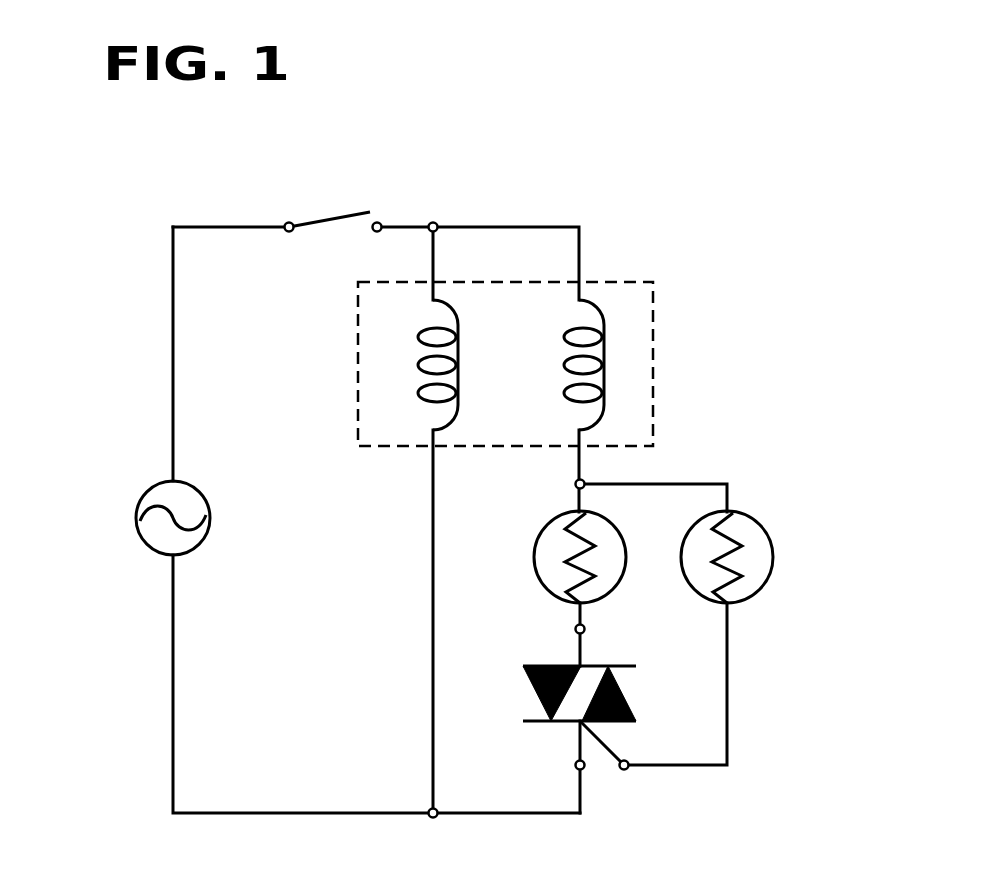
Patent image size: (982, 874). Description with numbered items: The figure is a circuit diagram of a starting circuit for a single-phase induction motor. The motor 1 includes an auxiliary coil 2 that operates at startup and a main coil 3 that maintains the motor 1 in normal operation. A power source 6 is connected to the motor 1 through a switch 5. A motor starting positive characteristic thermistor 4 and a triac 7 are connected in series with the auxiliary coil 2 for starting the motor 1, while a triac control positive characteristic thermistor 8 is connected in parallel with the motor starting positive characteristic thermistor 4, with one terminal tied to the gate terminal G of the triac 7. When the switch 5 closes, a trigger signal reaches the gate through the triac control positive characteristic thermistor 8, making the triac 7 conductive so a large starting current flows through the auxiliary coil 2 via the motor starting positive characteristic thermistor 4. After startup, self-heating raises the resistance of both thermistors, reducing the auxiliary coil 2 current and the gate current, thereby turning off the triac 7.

The motor 1 is at (653, 297).
The auxiliary coil 2 is at (604, 375).
The main coil 3 is at (420, 363).
The motor starting positive characteristic thermistor 4 is at (533, 553).
The switch 5 is at (323, 210).
The power source 6 is at (142, 540).
The triac 7 is at (632, 693).
The triac control positive characteristic thermistor 8 is at (773, 555).